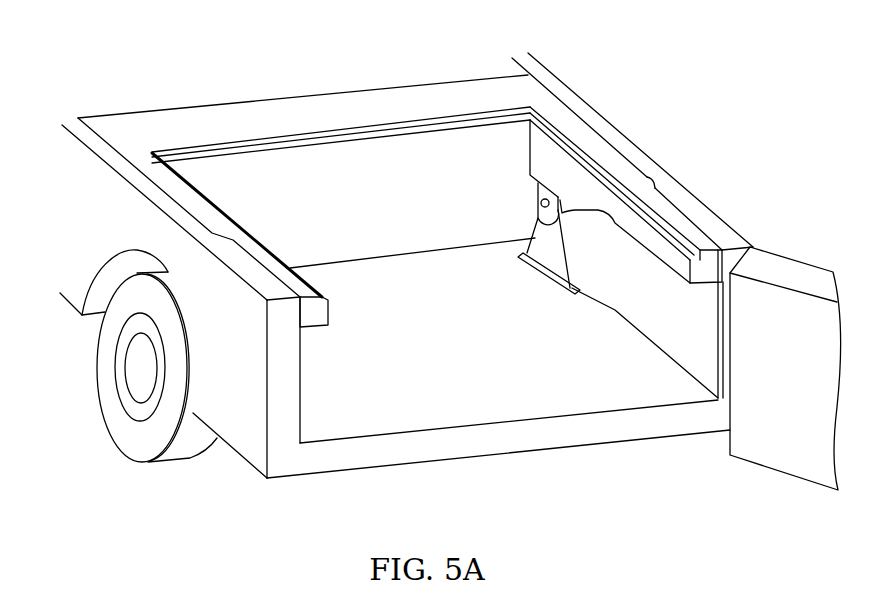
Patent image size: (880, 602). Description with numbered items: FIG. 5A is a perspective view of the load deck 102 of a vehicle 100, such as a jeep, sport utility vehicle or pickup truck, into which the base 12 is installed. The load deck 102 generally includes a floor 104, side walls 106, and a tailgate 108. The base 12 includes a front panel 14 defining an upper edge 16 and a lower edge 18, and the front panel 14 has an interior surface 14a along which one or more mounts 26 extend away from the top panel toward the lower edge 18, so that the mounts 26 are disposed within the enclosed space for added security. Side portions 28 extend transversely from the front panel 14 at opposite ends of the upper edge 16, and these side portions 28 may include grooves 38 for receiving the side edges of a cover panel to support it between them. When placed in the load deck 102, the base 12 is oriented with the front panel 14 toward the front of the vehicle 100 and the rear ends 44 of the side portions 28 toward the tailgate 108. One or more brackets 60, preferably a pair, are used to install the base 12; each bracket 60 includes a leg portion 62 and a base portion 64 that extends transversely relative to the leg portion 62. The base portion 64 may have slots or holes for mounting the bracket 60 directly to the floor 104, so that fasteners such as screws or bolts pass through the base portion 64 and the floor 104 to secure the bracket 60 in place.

The vehicle 100 is at (115, 101).
The base 12 is at (379, 86).
The front panel 14 is at (331, 105).
The interior surface of the front panel 14a is at (440, 152).
The upper edge 16 is at (484, 110).
The lower edge 18 is at (373, 259).
The mount 26 is at (538, 200).
The side portions 28 is at (600, 122).
The grooves 38 is at (610, 176).
The rear ends of the side portions 44 is at (713, 265).
The bracket 60 is at (563, 238).
The leg portion 62 is at (533, 233).
The base portion 64 is at (547, 278).
The load deck 102 is at (483, 346).
The floor 104 is at (440, 413).
The side walls 106 is at (300, 428).
The tailgate 108 is at (748, 455).